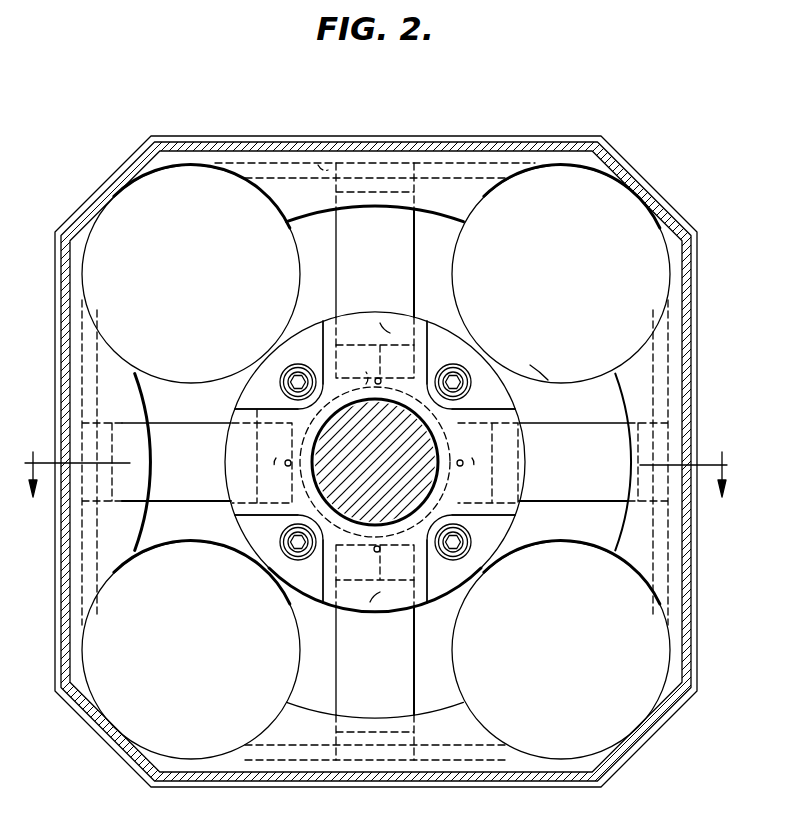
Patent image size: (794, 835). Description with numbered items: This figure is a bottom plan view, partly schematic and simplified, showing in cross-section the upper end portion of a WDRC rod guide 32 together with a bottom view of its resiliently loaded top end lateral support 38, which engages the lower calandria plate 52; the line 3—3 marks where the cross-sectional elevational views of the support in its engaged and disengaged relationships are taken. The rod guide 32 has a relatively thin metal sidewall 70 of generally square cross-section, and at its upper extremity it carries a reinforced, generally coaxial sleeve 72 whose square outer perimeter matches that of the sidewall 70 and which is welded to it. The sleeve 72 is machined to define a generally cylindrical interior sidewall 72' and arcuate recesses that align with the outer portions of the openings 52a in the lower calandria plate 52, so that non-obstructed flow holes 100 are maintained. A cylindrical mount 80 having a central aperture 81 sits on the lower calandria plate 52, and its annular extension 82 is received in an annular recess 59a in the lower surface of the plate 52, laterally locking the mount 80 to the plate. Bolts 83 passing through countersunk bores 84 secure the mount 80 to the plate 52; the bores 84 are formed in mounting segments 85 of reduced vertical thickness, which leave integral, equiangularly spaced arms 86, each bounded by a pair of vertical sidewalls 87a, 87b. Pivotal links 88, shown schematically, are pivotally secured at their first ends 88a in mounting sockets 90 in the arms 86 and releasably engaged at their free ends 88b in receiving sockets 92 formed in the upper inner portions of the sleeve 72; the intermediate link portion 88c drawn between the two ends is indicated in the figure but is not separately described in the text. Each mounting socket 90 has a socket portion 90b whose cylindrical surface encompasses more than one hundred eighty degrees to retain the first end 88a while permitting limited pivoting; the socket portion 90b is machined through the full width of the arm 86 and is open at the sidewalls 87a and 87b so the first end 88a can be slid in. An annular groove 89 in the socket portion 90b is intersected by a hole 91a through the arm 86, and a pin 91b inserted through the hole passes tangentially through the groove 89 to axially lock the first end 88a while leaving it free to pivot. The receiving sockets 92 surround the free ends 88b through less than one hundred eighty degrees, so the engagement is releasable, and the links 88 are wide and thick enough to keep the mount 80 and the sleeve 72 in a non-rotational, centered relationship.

The line 3— 3 is at (375, 478).
The WDRC rod guide 32 is at (684, 206).
The top end lateral support 38 is at (645, 162).
The lower calandria plate 52 is at (309, 264).
The openings 52a is at (170, 369).
The annular recess 59a is at (375, 562).
The thin metal sidewall 70 is at (240, 136).
The sleeve 72 is at (376, 435).
The cylindrical interior sidewall 72' is at (468, 628).
The cylindrical mount 80 is at (208, 555).
The central aperture 81 is at (368, 521).
The annular extension 82 is at (372, 551).
The bolts 83 is at (284, 373).
The countersunk bores 84 is at (291, 367).
The mounting segments 85 is at (252, 390).
The integral arms 86 is at (380, 324).
The vertical sidewall 87a is at (322, 328).
The vertical sidewall 87b is at (428, 328).
The pivotal links 88 is at (368, 247).
The first end 88a is at (357, 345).
The second free end 88b is at (418, 168).
The inner dashed groove 88c is at (400, 221).
The annular groove 89 is at (381, 351).
The mounting sockets 90 is at (343, 290).
The socket portion 90b is at (296, 313).
The hole 91a is at (394, 367).
The pin 91b is at (374, 380).
The receiving sockets 92 is at (318, 165).
The flow holes 100 is at (172, 286).